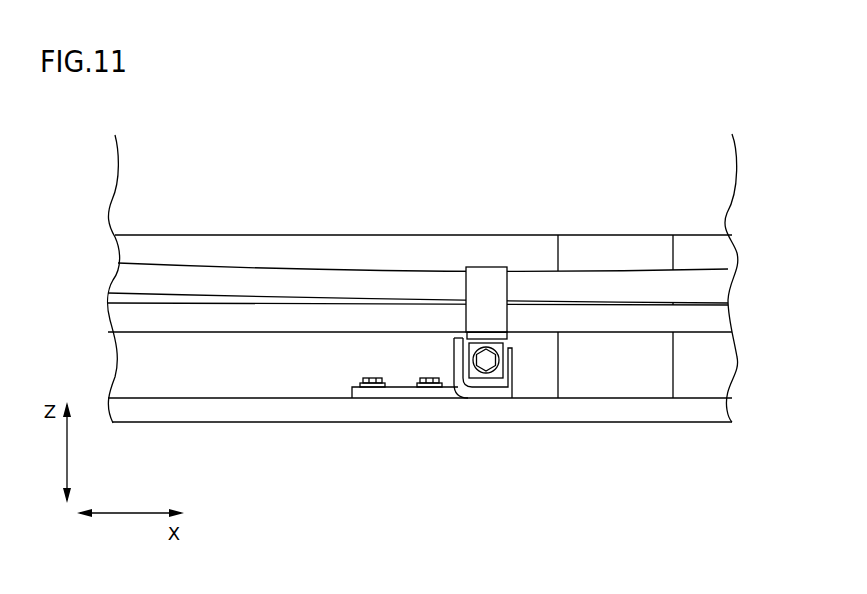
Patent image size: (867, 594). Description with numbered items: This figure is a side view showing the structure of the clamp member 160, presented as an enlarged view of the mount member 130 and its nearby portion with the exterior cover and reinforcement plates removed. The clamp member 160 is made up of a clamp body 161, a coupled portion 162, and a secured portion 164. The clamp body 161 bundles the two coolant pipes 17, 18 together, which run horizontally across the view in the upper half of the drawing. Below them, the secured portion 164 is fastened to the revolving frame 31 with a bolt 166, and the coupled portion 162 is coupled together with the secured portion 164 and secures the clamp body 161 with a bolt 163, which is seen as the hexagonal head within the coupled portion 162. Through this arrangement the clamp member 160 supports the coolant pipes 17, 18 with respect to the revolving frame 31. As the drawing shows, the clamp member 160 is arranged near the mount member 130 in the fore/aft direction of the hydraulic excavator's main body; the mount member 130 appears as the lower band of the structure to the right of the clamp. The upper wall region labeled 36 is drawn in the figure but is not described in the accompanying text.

The coolant pipe 17 is at (208, 278).
The coolant pipe 18 is at (268, 318).
The frame wall 36 is at (623, 176).
The revolving frame 31 is at (296, 408).
The mount member 130 is at (612, 376).
The clamp member 160 is at (520, 279).
The clamp body 161 is at (496, 318).
The coupled portion 162 is at (501, 381).
The bolt 163 is at (486, 362).
The secured portion 164 is at (398, 392).
The bolt 166 is at (370, 388).